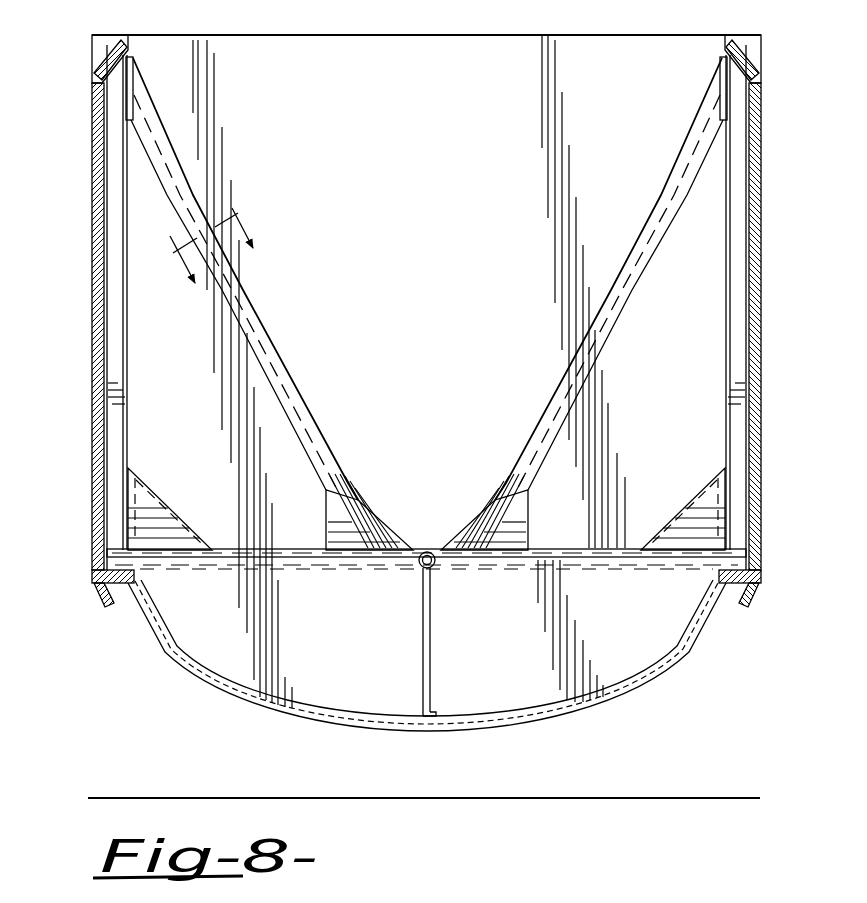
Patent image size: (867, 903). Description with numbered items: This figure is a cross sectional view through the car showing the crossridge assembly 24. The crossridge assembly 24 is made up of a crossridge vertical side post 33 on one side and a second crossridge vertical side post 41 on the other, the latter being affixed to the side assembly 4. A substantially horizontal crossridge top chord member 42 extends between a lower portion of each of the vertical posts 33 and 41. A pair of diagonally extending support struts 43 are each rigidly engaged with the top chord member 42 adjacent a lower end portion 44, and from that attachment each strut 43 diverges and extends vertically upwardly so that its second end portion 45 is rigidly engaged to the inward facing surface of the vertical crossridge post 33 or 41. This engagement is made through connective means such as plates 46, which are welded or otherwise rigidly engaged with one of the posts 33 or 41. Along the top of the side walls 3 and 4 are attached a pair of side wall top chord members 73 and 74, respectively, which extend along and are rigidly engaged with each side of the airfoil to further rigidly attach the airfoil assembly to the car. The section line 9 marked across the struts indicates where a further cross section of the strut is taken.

The side wall 3 is at (100, 398).
The side assembly 4 is at (760, 398).
The section line 9- 9 is at (200, 237).
The crossridge assembly 24 is at (188, 623).
The crossridge vertical side post 33 is at (113, 348).
The second crossridge vertical side post 41 is at (745, 352).
The crossridge top chord member 42 is at (600, 549).
The support strut 43 is at (292, 383).
The lower end portion 44 is at (482, 520).
The second end portion 45 is at (143, 102).
The plate 46 is at (128, 70).
The side wall top chord member 73 is at (93, 62).
The side wall top chord member 74 is at (760, 62).